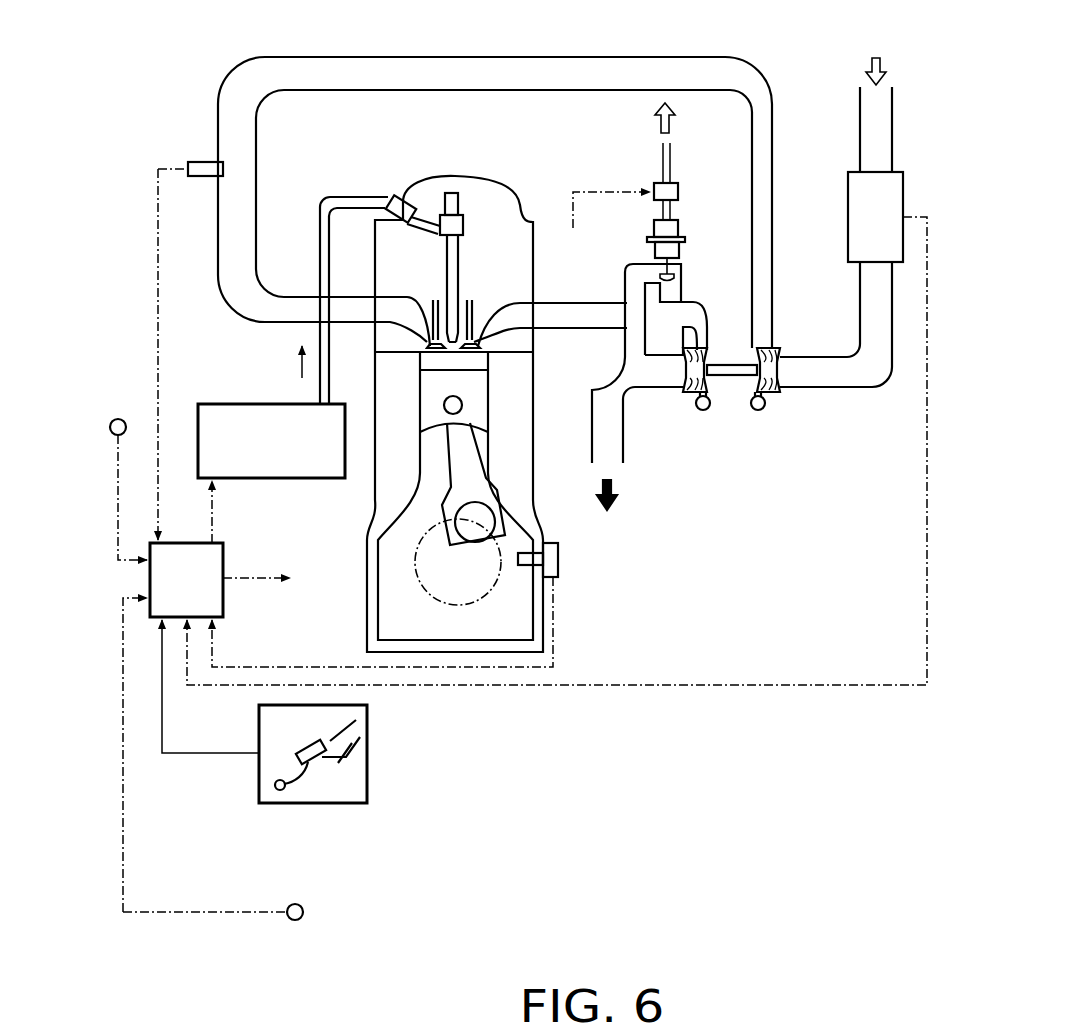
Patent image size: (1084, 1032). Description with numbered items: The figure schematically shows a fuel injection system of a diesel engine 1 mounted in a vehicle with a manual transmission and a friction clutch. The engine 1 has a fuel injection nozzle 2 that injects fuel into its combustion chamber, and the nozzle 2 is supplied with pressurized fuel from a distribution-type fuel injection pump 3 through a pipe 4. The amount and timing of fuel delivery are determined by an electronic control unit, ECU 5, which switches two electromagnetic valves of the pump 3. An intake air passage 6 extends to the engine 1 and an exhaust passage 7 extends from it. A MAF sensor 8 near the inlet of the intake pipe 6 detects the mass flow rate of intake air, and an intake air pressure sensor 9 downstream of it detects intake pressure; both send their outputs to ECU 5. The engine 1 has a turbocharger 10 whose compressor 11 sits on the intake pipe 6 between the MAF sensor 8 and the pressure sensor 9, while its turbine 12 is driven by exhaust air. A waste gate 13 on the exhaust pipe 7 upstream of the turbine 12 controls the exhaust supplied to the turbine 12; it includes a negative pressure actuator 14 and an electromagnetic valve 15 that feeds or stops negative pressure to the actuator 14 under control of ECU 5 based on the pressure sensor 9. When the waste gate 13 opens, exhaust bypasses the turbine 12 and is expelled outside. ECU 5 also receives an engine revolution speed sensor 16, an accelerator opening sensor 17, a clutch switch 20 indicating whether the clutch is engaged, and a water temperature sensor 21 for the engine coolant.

The diesel engine 1 is at (540, 206).
The fuel injection nozzle 2 is at (452, 265).
The fuel injection pump 3 is at (280, 480).
The pipe 4 is at (322, 242).
The electronic control unit (ECU) 5 is at (223, 605).
The intake air passage 6 is at (523, 66).
The exhaust passage 7 is at (563, 317).
The MAF sensor 8 is at (858, 215).
The intake air pressure sensor 9 is at (208, 163).
The turbocharger 10 is at (734, 406).
The compressor 11 is at (777, 393).
The turbine 12 is at (690, 392).
The waste gate 13 is at (700, 248).
The negative pressure actuator 14 is at (660, 227).
The electromagnetic valve 15 is at (670, 190).
The engine revolution speed sensor 16 is at (558, 560).
The accelerator opening sensor 17 is at (367, 767).
The clutch switch 20 is at (303, 908).
The water temperature sensor 21 is at (116, 420).